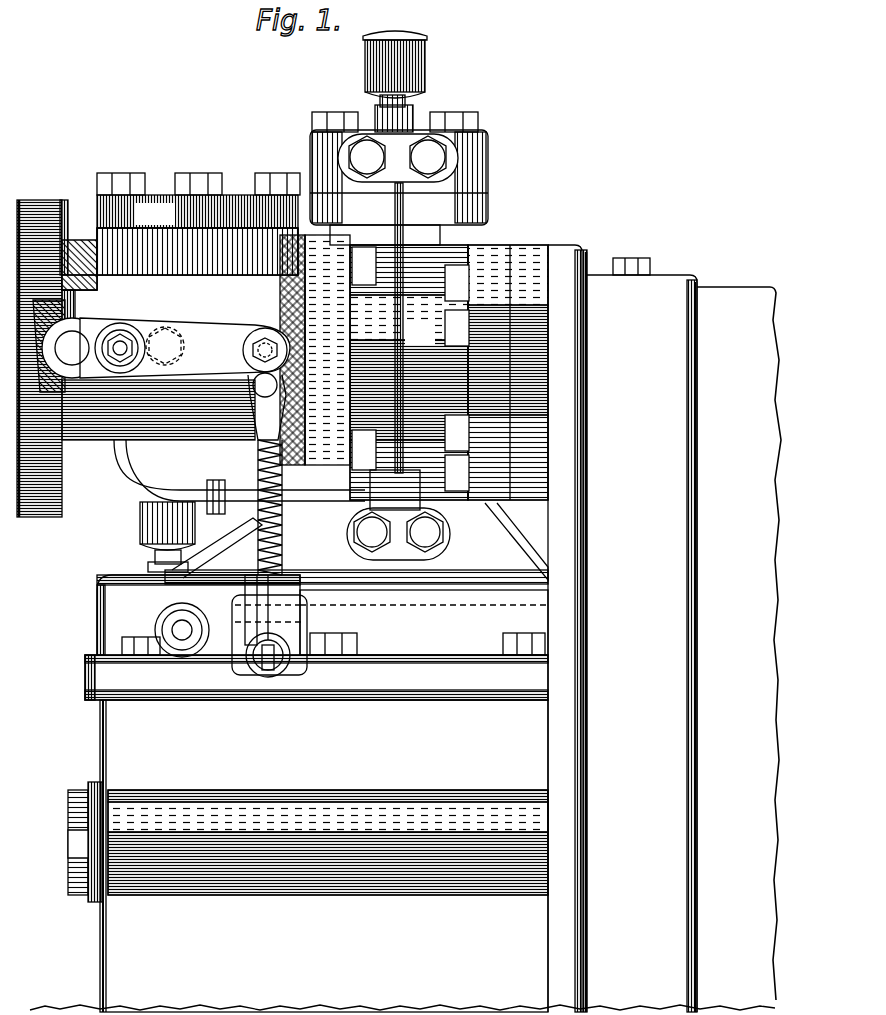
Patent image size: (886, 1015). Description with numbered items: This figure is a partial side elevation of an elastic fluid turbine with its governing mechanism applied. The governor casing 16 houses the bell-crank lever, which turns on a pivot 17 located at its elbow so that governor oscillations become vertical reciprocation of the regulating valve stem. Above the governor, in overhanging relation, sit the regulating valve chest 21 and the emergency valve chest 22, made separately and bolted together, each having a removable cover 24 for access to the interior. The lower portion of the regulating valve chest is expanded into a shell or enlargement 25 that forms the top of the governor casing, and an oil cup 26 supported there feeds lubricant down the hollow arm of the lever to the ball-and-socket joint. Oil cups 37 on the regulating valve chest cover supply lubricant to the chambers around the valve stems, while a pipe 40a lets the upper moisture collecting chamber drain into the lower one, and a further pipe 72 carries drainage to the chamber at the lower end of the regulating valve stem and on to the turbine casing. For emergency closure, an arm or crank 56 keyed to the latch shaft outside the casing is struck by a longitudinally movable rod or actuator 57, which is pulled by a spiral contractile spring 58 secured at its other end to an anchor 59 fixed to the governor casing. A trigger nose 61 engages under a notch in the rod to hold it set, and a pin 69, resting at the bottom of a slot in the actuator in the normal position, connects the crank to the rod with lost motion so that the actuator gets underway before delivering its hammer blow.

The governor casing 16 is at (405, 628).
The pivot 17 is at (180, 630).
The regulating valve chest 21 is at (414, 362).
The emergency valve chest 22 is at (161, 346).
The removable cover 24 is at (500, 155).
The shell or enlargement 25 is at (316, 601).
The oil cup 26 is at (140, 531).
The oil cup 37 is at (427, 64).
The pipe 40a is at (402, 252).
The arm or crank 56 is at (250, 350).
The rod or actuator 57 is at (257, 407).
The spiral contractile spring 58 is at (283, 531).
The anchor 59 is at (268, 677).
The nose 61 is at (256, 584).
The pin 69 is at (255, 355).
The pipe 72 is at (124, 457).